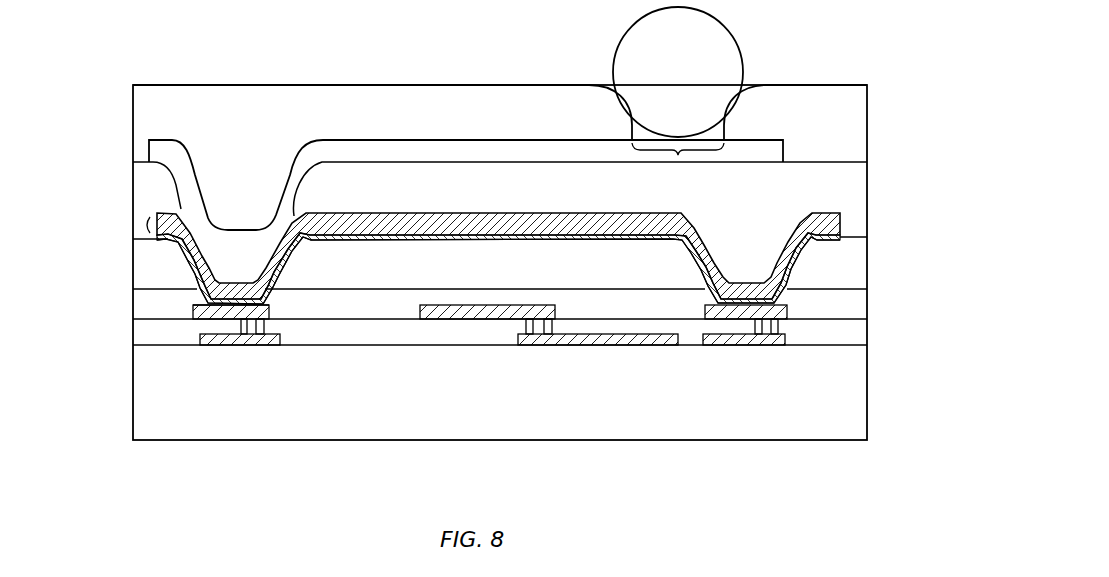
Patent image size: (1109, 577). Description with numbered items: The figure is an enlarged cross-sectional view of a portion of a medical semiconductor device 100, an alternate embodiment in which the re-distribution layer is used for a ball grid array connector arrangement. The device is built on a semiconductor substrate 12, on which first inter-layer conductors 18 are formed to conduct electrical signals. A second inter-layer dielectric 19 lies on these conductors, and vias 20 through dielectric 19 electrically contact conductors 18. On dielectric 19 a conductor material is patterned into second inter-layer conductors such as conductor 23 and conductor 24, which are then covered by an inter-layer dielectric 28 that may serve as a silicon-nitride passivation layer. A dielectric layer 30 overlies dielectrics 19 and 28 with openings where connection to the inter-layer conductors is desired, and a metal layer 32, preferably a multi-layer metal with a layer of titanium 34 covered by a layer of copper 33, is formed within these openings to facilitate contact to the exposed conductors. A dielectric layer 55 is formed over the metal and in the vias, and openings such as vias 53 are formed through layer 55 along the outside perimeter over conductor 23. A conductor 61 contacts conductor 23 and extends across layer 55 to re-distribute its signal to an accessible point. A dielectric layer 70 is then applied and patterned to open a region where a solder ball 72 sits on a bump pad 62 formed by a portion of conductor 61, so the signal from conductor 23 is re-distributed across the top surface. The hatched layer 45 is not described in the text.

The medical semiconductor device 100 is at (667, 489).
The semiconductor substrate 12 is at (241, 419).
The conductors 18 is at (210, 337).
The second inter-layer dielectric 19 is at (140, 332).
The vias 20 is at (268, 326).
The conductor 23 is at (270, 313).
The conductor 24 is at (788, 306).
The inter-layer dielectric 28 is at (143, 305).
The dielectric layer 30 is at (145, 257).
The metal layer 32 is at (145, 226).
The layer of copper 33 is at (829, 236).
The layer of titanium 34 is at (843, 232).
The redistribution metal layer 45 is at (535, 213).
The vias 53 is at (252, 68).
The dielectric layer 55 is at (788, 204).
The conductor 61 is at (779, 153).
The bump pad 62 is at (677, 157).
The dielectric layer 70 is at (421, 124).
The solder ball 72 is at (723, 49).